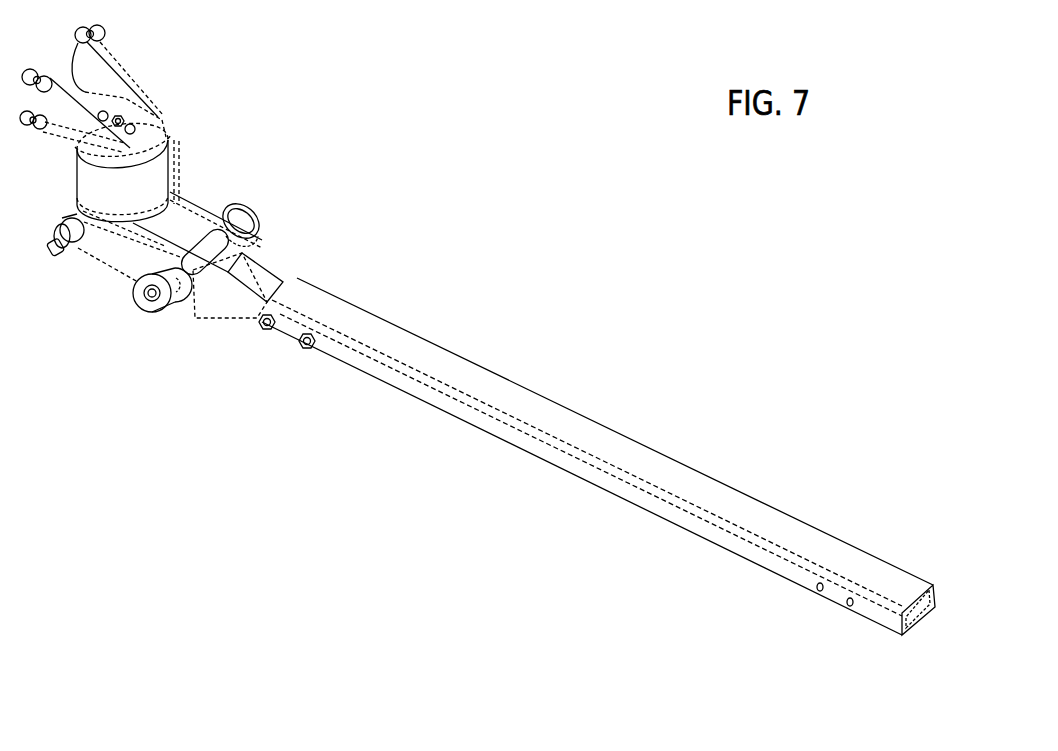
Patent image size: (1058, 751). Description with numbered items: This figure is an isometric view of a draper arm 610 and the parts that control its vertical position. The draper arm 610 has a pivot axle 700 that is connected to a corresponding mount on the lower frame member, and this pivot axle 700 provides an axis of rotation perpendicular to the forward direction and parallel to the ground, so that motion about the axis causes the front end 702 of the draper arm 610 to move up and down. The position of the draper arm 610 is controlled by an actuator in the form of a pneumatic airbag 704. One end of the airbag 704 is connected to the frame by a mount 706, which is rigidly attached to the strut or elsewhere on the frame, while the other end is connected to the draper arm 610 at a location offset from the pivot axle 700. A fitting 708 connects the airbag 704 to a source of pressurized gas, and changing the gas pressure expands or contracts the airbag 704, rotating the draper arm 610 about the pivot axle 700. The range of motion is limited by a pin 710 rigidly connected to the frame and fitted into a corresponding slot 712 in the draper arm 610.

The draper arm 610 is at (527, 398).
The pivot axle 700 is at (249, 210).
The front end 702 is at (858, 568).
The pneumatic airbag 704 is at (150, 183).
The mount 706 is at (102, 80).
The fitting 708 is at (118, 114).
The pin 710 is at (52, 254).
The slot 712 is at (78, 256).